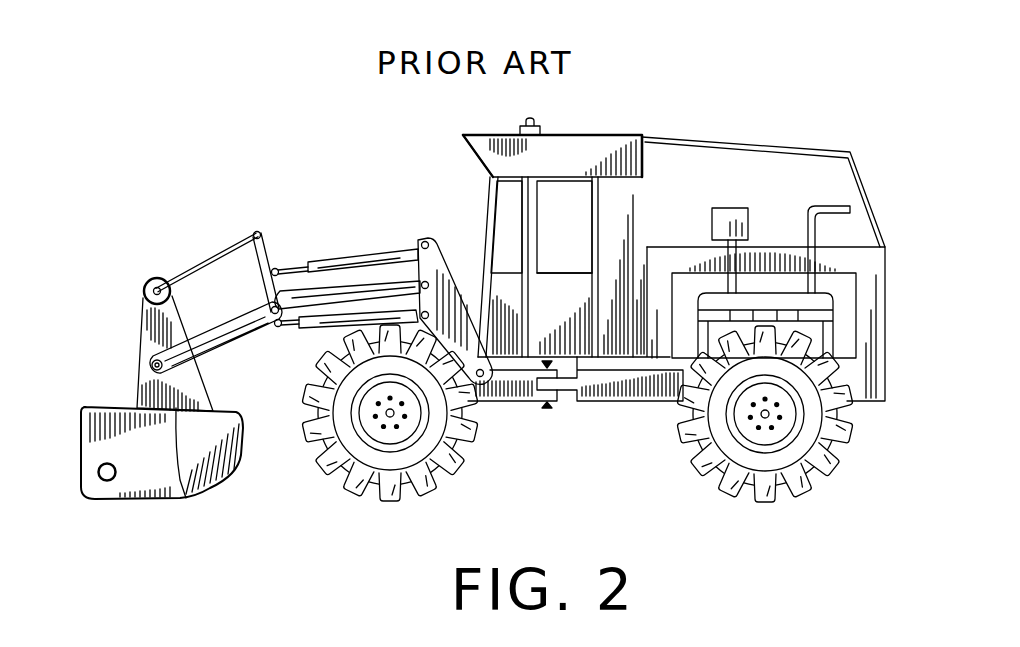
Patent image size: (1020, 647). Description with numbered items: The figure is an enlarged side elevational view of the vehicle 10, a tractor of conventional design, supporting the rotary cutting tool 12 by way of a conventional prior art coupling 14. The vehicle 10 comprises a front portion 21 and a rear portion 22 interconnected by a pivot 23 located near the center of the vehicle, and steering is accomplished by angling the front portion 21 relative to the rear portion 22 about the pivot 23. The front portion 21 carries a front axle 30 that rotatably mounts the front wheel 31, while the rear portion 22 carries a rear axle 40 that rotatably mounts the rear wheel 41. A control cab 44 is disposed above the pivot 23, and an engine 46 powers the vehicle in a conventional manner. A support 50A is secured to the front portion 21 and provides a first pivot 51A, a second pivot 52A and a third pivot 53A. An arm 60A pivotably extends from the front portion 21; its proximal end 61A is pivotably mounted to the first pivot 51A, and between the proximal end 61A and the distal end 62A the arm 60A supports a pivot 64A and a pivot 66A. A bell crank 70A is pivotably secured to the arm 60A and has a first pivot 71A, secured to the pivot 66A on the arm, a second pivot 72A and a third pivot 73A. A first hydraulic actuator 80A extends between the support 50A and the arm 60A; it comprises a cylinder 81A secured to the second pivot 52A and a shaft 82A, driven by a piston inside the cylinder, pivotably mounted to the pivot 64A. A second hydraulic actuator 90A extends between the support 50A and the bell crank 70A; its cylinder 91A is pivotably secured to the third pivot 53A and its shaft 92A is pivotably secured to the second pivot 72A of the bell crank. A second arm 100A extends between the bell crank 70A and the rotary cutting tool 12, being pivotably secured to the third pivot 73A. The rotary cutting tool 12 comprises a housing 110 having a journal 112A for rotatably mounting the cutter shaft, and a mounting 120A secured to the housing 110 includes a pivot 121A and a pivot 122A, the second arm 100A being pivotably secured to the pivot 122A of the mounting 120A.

The vehicle 10 is at (608, 284).
The rotary cutting tool 12 is at (159, 474).
The prior art loader attachment 14 is at (272, 262).
The front portion 21 is at (495, 405).
The rear portion 22 is at (638, 402).
The pivot 23 is at (548, 408).
The front axle 30 is at (385, 443).
The front wheel 31 is at (360, 485).
The rear axle 40 is at (801, 434).
The rear wheel 41 is at (838, 456).
The control cab 44 is at (590, 150).
The engine 46 is at (787, 310).
The support 50A is at (549, 221).
The first pivot 51A is at (428, 285).
The second pivot 52A is at (430, 316).
The third pivot 53A is at (426, 241).
The arm 60A is at (330, 296).
The proximal end 61A is at (395, 306).
The distal end 62A is at (132, 340).
The pivot 64A is at (289, 332).
The pivot 66A is at (276, 323).
The bell crank 70A is at (262, 262).
The first pivot 71A is at (271, 308).
The second pivot 72A is at (255, 327).
The third pivot 73A is at (258, 236).
The first hydraulic actuator 80A is at (338, 266).
The cylinder 81A is at (372, 290).
The shaft 82A is at (324, 474).
The second hydraulic actuator 90A is at (388, 262).
The cylinder 91A is at (398, 282).
The shaft 92A is at (254, 230).
The second arm 100A is at (170, 260).
The housing 110 is at (236, 468).
The journal 112A is at (110, 480).
The mounting 120A is at (140, 398).
The pivot 121A is at (175, 470).
The pivot 122A is at (145, 282).